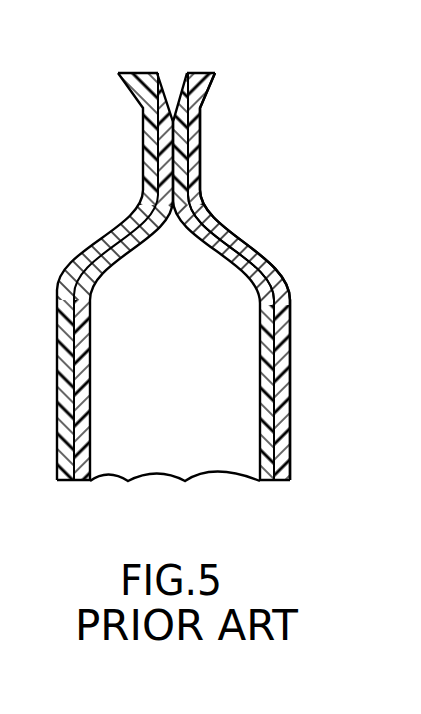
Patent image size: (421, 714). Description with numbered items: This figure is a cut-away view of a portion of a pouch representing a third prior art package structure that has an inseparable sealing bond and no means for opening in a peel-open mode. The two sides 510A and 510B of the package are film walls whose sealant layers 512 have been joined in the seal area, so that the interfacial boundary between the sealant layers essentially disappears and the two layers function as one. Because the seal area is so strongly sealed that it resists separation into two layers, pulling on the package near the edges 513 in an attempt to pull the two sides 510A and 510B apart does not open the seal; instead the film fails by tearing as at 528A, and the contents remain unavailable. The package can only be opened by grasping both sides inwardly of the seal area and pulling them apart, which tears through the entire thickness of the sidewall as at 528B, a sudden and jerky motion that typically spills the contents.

The first side of the package 510A is at (137, 108).
The second side of the package 510B is at (200, 107).
The sealant layers 512 is at (170, 170).
The edges of the film 513 is at (208, 72).
The tear location in the film 528A is at (197, 125).
The tear through the sidewall 528B is at (195, 210).